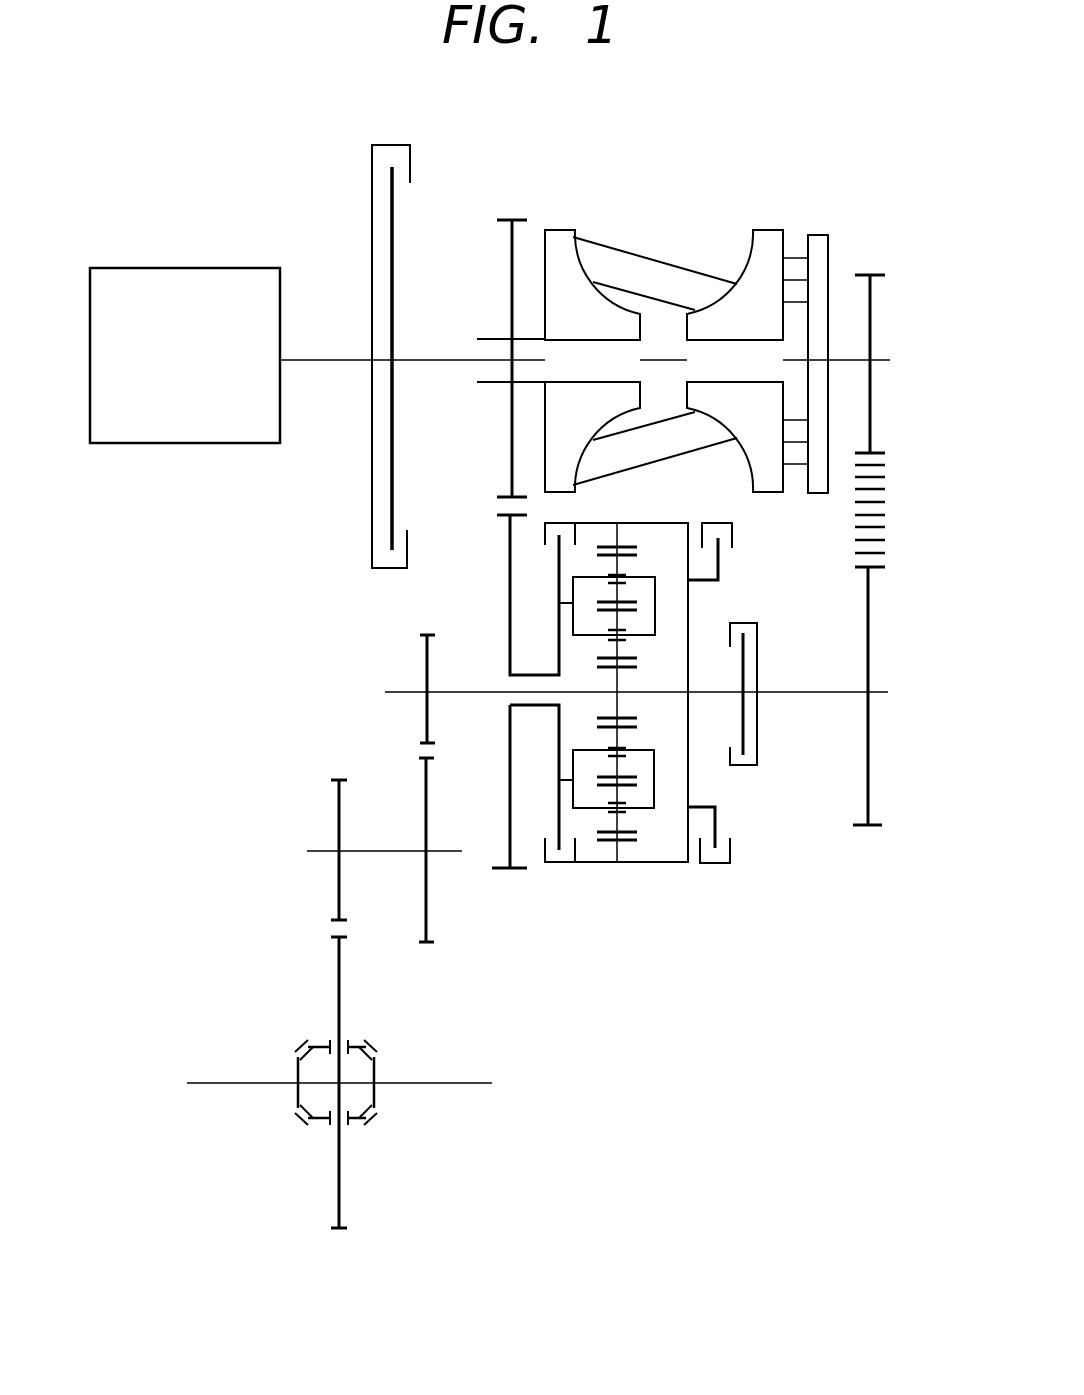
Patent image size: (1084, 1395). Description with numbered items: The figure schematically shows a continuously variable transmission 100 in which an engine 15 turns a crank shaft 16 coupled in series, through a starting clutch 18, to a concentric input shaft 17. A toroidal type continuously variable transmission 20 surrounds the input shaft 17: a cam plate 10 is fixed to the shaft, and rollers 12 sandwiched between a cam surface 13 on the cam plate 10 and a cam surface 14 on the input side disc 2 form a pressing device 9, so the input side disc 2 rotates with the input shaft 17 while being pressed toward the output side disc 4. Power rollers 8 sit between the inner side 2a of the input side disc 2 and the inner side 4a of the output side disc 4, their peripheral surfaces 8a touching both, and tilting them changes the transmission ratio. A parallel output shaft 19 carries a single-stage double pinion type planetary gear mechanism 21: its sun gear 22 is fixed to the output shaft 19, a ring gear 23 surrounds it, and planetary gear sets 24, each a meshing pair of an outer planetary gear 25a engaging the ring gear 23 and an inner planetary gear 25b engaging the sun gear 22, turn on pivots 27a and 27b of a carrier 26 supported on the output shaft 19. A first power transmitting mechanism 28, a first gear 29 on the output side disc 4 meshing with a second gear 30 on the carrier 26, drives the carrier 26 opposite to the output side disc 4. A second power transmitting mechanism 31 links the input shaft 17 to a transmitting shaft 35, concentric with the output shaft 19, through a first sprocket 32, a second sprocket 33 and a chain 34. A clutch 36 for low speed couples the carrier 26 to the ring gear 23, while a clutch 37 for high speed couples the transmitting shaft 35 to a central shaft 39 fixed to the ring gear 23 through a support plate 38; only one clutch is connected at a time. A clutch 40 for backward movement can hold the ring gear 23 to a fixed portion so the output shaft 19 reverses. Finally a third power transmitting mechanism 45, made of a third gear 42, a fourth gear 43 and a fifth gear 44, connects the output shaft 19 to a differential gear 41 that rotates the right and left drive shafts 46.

The input side disc 2 is at (778, 230).
The inner side 2a is at (748, 473).
The output side disc 4 is at (570, 233).
The inner side 4a is at (588, 274).
The power rollers 8 is at (665, 270).
The peripheral surfaces 8a is at (670, 427).
The pressing device 9 is at (872, 307).
The cam plate 10 is at (822, 242).
The rollers 12 is at (800, 268).
The cam surface 13 is at (805, 478).
The cam surface 14 is at (830, 407).
The engine 15 is at (223, 267).
The crank shaft 16 is at (335, 358).
The input shaft 17 is at (427, 358).
The starting clutch 18 is at (407, 145).
The output shaft 19 is at (462, 693).
The toroidal type continuously variable transmission 20 is at (730, 210).
The single-stage double pinion type planetary gear mechanism 21 is at (655, 873).
The sun gear 22 is at (660, 693).
The ring gear 23 is at (615, 850).
The planetary gear sets 24 is at (640, 635).
The planetary gear 25a is at (600, 588).
The planetary gear 25b is at (583, 750).
The carrier 26 is at (557, 797).
The pivot 27a is at (592, 576).
The pivot 27b is at (655, 592).
The first power transmitting mechanism 28 is at (510, 460).
The first gear 29 is at (510, 433).
The second gear 30 is at (510, 535).
The second power transmitting mechanism 31 is at (885, 598).
The first sprocket 32 is at (872, 415).
The second sprocket 33 is at (870, 637).
The chain 34 is at (880, 512).
The transmitting shaft 35 is at (823, 695).
The clutch for low speed 36 is at (557, 863).
The clutch for high speed 37 is at (757, 733).
The support plate 38 is at (688, 658).
The central shaft 39 is at (718, 697).
The clutch for backward movement 40 is at (712, 868).
The differential gear 41 is at (355, 1047).
The third gear 42 is at (423, 708).
The fourth gear 43 is at (423, 820).
The fifth gear 44 is at (337, 803).
The third power transmitting mechanism 45 is at (337, 879).
The drive shafts 46 is at (271, 1081).
The continuously variable transmission 100 is at (330, 618).